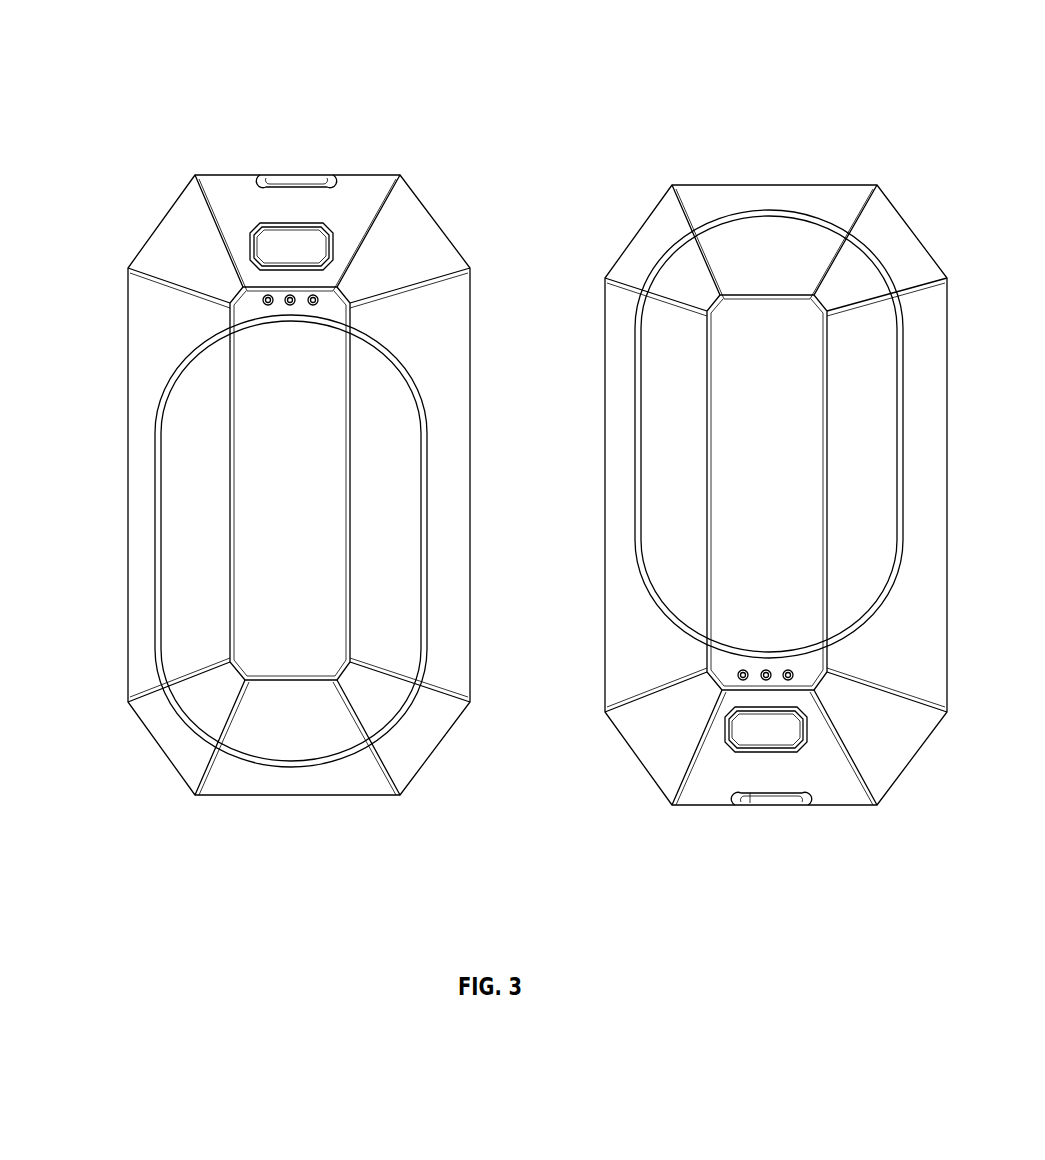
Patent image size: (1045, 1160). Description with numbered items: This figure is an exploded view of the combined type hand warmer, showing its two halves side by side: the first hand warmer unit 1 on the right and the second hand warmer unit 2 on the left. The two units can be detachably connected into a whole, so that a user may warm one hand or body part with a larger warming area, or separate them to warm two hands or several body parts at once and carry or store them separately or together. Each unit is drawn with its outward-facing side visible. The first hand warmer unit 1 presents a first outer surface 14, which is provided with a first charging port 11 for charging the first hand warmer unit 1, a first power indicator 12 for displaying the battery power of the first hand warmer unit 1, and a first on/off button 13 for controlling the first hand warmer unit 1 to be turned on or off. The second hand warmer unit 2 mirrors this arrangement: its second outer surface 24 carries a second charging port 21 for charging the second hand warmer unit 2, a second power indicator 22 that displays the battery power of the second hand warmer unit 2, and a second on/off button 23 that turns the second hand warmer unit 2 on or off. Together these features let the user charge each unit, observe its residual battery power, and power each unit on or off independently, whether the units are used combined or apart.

The first hand warmer unit 1 is at (725, 511).
The first charging port 11 is at (776, 802).
The first power indicator 12 is at (739, 675).
The first on/off button 13 is at (757, 730).
The first outer surface 14 is at (672, 345).
The second hand warmer unit 2 is at (250, 451).
The second charging port 21 is at (296, 178).
The second power indicator 22 is at (264, 299).
The second on/off button 23 is at (305, 248).
The second outer surface 24 is at (187, 333).